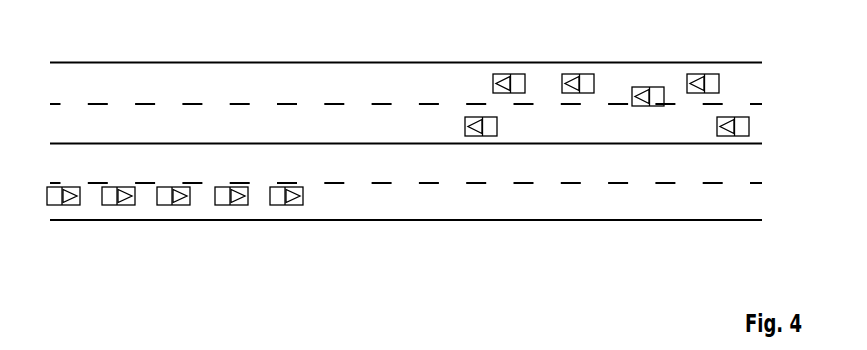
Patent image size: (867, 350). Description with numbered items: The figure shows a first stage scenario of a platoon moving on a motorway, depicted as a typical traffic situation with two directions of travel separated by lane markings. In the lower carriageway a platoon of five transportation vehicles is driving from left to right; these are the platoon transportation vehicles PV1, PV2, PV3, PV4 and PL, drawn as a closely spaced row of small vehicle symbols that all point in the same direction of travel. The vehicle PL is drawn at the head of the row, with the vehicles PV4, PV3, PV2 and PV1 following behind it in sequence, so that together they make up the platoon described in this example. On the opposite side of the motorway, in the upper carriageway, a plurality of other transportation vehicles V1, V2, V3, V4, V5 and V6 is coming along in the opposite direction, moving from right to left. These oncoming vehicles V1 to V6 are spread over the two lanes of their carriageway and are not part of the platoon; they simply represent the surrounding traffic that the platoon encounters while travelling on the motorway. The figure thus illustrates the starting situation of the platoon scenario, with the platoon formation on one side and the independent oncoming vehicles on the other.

The transportation vehicle V1 is at (488, 123).
The transportation vehicle V2 is at (518, 79).
The transportation vehicle V3 is at (586, 79).
The transportation vehicle V4 is at (656, 93).
The transportation vehicle V5 is at (712, 80).
The transportation vehicle V6 is at (740, 122).
The platoon transportation vehicle PV1 is at (57, 200).
The platoon transportation vehicle PV2 is at (117, 200).
The platoon transportation vehicle PV3 is at (170, 200).
The platoon transportation vehicle PV4 is at (229, 200).
The platoon transportation vehicle PL is at (283, 200).